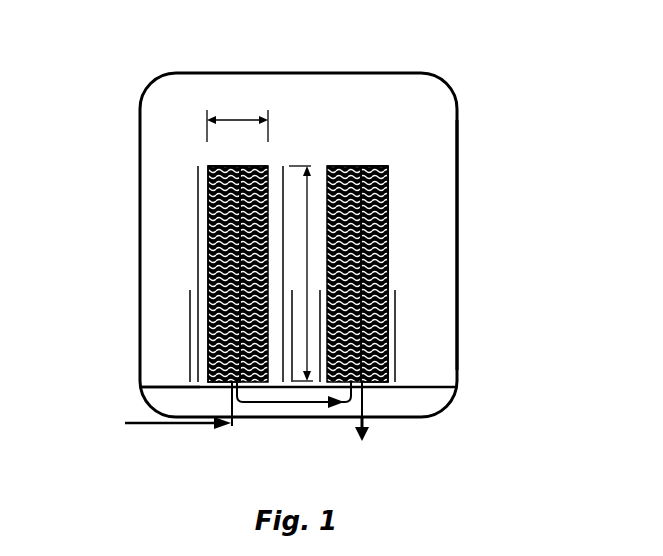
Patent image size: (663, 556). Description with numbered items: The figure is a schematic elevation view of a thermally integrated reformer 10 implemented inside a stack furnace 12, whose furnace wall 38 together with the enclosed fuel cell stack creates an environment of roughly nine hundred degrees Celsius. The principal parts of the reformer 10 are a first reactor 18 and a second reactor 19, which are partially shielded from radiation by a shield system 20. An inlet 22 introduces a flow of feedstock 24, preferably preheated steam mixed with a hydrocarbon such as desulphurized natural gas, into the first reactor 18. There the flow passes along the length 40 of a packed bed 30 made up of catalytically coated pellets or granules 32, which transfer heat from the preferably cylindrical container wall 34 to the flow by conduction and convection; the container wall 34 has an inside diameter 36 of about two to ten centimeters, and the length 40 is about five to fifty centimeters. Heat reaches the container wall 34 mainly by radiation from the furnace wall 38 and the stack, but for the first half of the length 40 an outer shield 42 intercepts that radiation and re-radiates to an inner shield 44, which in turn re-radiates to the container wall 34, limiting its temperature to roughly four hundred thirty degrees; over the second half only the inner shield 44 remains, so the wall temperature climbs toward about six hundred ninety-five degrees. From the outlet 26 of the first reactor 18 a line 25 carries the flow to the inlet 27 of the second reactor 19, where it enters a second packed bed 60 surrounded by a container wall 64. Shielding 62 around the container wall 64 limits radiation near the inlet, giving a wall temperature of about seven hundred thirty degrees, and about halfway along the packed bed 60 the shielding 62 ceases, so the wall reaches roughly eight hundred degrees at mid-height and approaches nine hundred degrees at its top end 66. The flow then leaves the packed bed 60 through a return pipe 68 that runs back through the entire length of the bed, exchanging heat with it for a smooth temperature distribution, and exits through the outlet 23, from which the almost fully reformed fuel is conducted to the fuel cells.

The reformer 10 is at (84, 400).
The furnace 12 is at (470, 105).
The first reactor 18 is at (235, 158).
The second reactor 19 is at (338, 158).
The shield system 20 is at (168, 348).
The inlet 22 is at (238, 426).
The outlet 23 is at (362, 395).
The feedstock 24 is at (152, 424).
The line 25 is at (288, 406).
The outlet of the reactor 26 is at (199, 205).
The inlet of the reactor 27 is at (353, 398).
The packed bed 30 is at (251, 165).
The pellets or granules 32 is at (226, 166).
The container wall 34 is at (198, 177).
The inside diameter 36 is at (214, 116).
The furnace wall 38 is at (458, 140).
The length 40 is at (303, 228).
The outer shield 42 is at (190, 307).
The inner shield 44 is at (198, 258).
The packed bed 60 is at (377, 165).
The shielding 62 is at (395, 308).
The container wall 64 is at (388, 205).
The top end 66 is at (355, 165).
The return pipe 68 is at (360, 272).